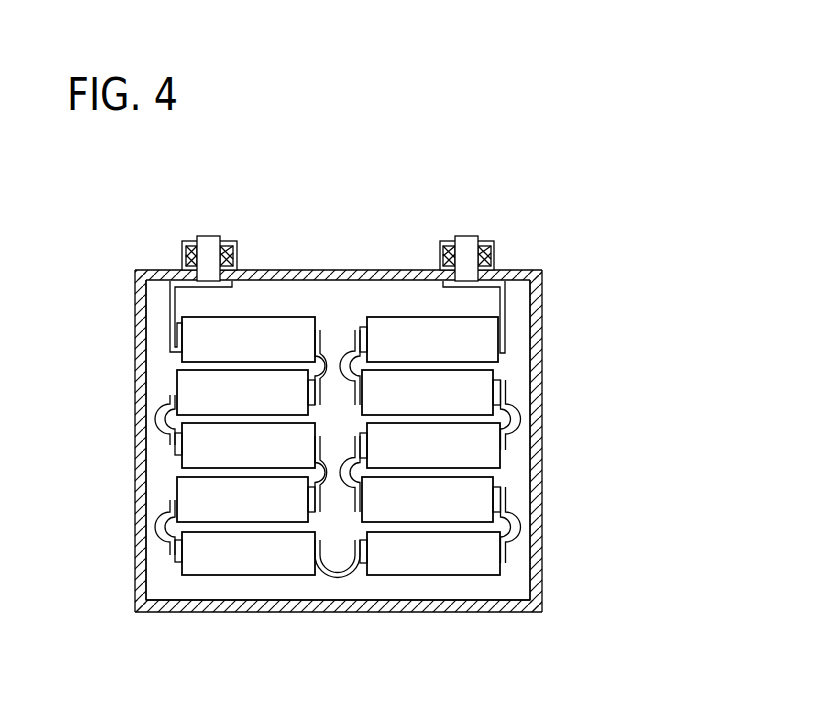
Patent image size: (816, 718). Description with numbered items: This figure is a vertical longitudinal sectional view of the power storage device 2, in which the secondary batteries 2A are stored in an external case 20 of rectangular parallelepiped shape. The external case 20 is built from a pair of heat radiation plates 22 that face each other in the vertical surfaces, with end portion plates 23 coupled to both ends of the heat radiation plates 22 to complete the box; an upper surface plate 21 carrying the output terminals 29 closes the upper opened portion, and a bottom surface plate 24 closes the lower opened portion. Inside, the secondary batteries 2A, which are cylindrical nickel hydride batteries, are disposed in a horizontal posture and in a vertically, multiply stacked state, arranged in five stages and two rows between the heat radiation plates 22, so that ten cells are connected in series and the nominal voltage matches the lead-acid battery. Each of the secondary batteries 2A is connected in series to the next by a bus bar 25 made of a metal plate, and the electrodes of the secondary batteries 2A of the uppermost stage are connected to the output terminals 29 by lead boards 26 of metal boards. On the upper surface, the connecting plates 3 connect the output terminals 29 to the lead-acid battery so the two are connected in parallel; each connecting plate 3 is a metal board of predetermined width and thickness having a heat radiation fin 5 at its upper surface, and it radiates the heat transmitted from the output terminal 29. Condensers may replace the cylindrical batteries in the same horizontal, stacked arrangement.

The power storage device 2 is at (594, 214).
The secondary battery 2A is at (235, 333).
The connecting plate 3 is at (186, 268).
The heat radiation fin 5 is at (185, 245).
The external case 20 is at (700, 283).
The upper surface plate 21 is at (542, 256).
The heat radiation plate 22 is at (542, 488).
The end portion plate 23 is at (542, 377).
The bottom surface plate 24 is at (495, 612).
The bus bar 25 is at (157, 412).
The lead board 26 is at (170, 318).
The output terminal 29 is at (210, 237).